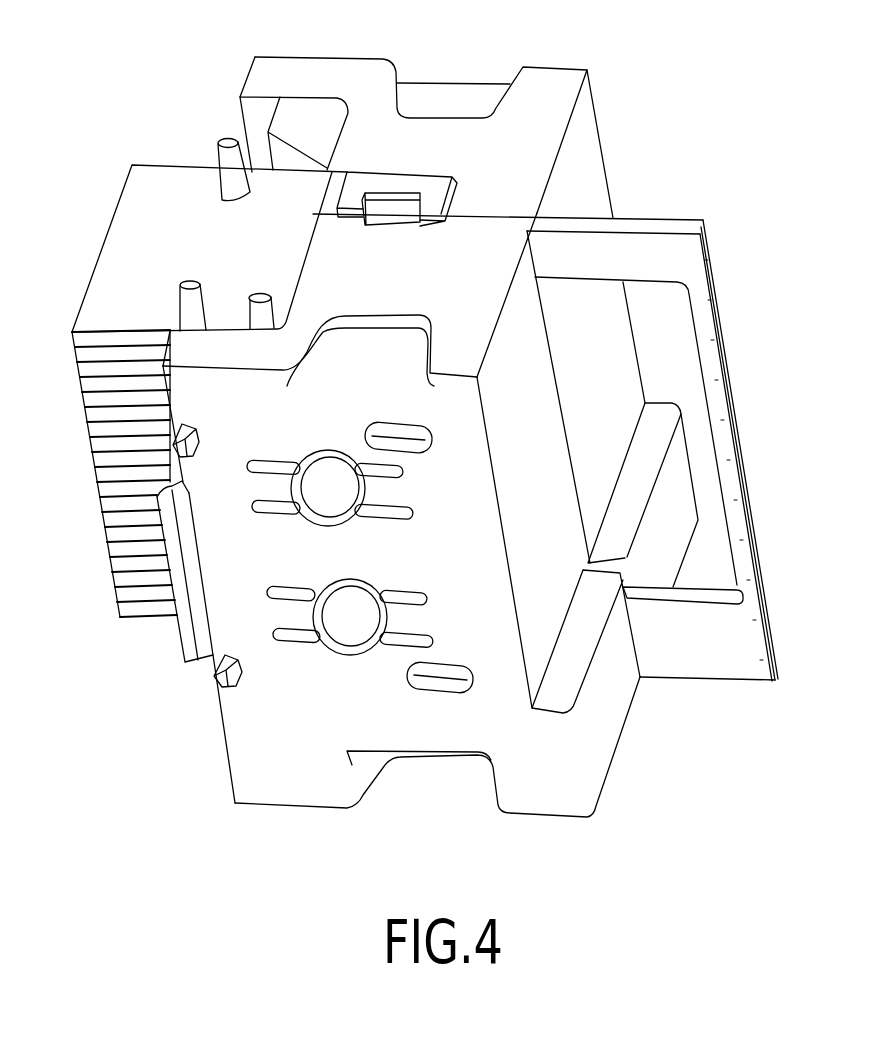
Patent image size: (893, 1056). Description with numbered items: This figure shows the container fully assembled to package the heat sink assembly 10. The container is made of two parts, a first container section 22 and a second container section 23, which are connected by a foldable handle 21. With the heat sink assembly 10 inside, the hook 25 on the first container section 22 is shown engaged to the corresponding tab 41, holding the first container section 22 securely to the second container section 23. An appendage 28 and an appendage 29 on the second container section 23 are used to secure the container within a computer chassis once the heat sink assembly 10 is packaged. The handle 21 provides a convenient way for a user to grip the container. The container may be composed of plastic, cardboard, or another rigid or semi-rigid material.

The heat sink assembly 10 is at (131, 230).
The foldable handle 21 is at (715, 265).
The first container section 22 is at (550, 820).
The second container section 23 is at (567, 63).
The hook 25 is at (433, 187).
The appendage 28 is at (175, 441).
The appendage 29 is at (217, 673).
The tab 41 is at (395, 212).